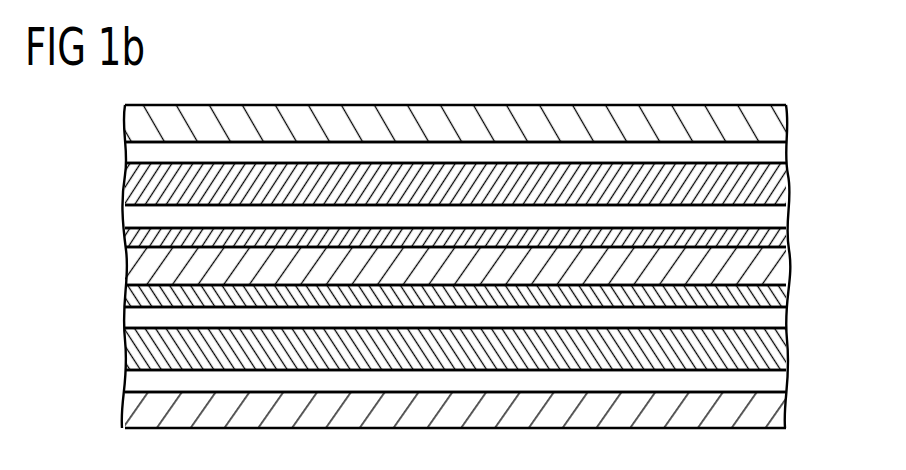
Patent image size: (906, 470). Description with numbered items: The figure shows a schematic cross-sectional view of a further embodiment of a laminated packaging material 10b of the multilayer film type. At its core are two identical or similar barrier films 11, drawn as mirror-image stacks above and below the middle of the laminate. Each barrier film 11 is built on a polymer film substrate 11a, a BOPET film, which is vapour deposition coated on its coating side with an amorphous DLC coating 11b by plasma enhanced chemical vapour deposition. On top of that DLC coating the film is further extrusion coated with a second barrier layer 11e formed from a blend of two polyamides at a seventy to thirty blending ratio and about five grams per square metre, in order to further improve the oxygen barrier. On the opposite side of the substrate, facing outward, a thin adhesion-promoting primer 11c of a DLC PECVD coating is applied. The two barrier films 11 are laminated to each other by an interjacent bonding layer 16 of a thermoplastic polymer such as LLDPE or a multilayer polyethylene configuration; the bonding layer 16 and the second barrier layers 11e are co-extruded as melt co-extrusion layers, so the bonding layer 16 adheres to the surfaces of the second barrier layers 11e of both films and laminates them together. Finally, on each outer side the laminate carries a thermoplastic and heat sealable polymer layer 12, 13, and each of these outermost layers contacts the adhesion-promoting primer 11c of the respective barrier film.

The laminated packaging material 10b is at (441, 264).
The barrier film 11 is at (120, 143).
The polymer film substrate 11a is at (772, 186).
The amorphous DLC coating 11b is at (772, 216).
The adhesion-promoting primer 11c is at (772, 152).
The second barrier layer 11e is at (772, 238).
The thermoplastic and heat sealable polymer layer 12 is at (772, 118).
The thermoplastic and heat sealable polymer layer 13 is at (775, 407).
The bonding layer 16 is at (773, 272).